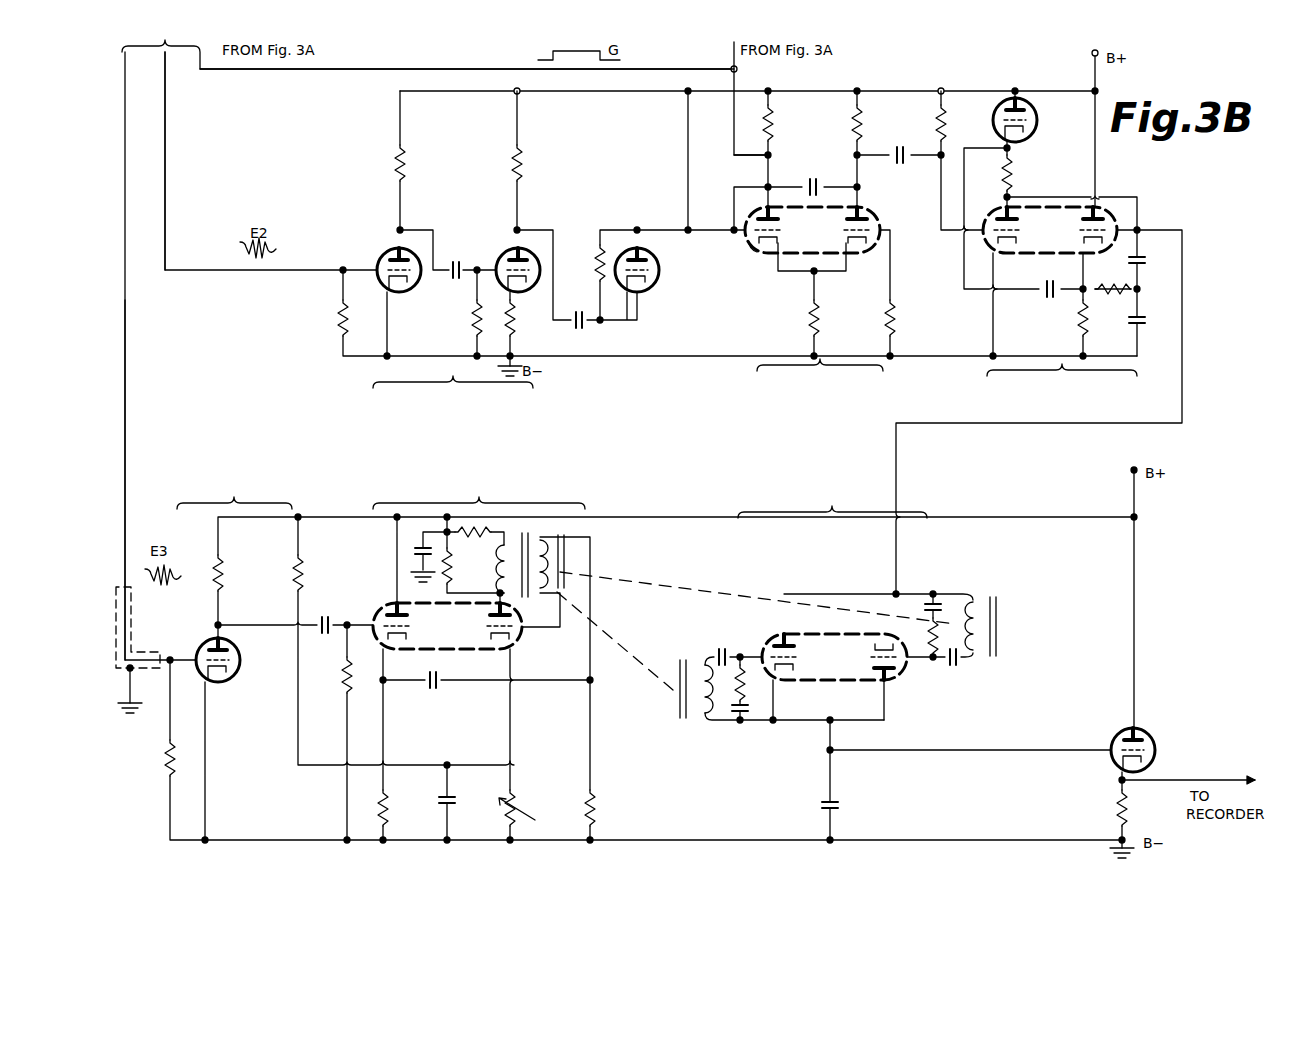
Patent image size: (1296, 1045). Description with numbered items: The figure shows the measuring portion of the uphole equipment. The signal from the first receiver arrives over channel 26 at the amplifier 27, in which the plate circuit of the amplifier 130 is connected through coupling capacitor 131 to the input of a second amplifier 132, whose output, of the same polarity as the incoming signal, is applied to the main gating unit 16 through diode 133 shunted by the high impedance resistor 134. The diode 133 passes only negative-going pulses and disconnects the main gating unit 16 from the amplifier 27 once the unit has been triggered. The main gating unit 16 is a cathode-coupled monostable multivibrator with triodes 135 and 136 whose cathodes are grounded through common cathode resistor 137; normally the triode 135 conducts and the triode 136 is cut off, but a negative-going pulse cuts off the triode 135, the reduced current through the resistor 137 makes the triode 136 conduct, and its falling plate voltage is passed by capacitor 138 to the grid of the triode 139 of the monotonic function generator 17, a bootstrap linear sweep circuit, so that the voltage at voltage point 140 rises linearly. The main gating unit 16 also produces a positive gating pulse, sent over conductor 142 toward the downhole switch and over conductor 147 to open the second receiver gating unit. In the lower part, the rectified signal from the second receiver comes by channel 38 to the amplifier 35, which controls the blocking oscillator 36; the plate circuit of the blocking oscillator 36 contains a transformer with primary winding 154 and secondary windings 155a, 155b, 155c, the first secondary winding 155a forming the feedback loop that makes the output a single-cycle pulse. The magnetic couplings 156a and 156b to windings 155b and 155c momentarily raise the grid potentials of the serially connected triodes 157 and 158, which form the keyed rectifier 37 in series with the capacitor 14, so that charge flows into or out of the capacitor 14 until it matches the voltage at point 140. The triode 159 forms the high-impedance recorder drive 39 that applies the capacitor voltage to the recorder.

The channel 26 is at (167, 158).
The channel 38 is at (128, 390).
The conductor 142 is at (347, 68).
The conductor 147 is at (736, 69).
The amplifier 130 is at (385, 250).
The coupling capacitor 131 is at (452, 263).
The second amplifier 132 is at (512, 248).
The diode 133 is at (660, 276).
The high impedance resistor 134 is at (597, 260).
The triode 135 is at (757, 254).
The triode 136 is at (870, 216).
The common cathode resistor 137 is at (822, 331).
The capacitor 138 is at (898, 147).
The triode 139 is at (985, 245).
The voltage point 140 is at (1141, 228).
The amplifier 27 is at (453, 393).
The main gating unit 16 is at (832, 385).
The monotonic function generator 17 is at (1062, 392).
The amplifier 35 is at (235, 580).
The blocking oscillator 36 is at (479, 492).
The keyed rectifier 37 is at (809, 505).
The primary winding 154 is at (447, 583).
The first secondary winding 155a is at (560, 535).
The secondary winding 155b is at (711, 722).
The secondary winding 155c is at (963, 600).
The magnetic coupling 156a is at (628, 651).
The magnetic coupling 156b is at (693, 587).
The triode 157 is at (768, 641).
The triode 158 is at (898, 677).
The triode 159 is at (1113, 735).
The capacitor 14 is at (840, 801).
The recorder drive 39 is at (1205, 740).